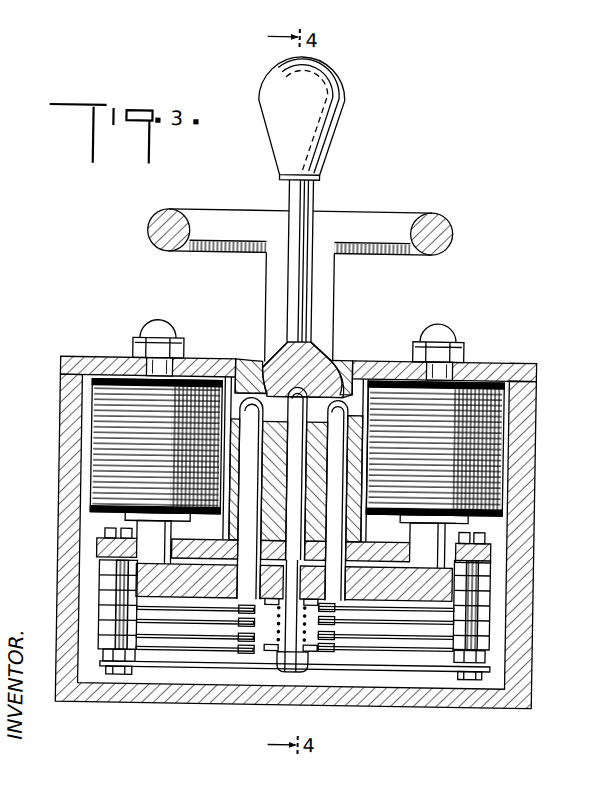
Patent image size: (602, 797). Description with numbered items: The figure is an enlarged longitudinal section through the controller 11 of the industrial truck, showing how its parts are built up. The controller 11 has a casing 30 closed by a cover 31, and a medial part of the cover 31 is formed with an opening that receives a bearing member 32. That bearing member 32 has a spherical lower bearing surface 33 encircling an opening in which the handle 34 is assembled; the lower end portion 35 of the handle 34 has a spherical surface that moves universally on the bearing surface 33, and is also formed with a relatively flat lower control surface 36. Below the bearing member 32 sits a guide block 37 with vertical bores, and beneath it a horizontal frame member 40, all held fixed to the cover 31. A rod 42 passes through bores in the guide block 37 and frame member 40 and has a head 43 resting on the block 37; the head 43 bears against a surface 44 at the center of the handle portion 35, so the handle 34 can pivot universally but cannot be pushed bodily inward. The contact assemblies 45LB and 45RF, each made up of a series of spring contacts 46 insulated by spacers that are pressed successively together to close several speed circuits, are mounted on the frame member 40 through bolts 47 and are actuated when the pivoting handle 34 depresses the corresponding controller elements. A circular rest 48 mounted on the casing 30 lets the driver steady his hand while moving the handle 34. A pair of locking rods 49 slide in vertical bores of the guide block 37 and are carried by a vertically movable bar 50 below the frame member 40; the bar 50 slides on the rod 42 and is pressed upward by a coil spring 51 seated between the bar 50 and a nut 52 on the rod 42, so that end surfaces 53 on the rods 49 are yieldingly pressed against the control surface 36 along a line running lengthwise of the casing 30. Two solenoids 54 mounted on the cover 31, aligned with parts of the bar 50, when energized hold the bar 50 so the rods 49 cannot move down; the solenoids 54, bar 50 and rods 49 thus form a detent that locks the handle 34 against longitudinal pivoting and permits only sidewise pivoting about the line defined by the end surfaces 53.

The controller 11 is at (130, 303).
The casing 30 is at (533, 420).
The cover 31 is at (517, 365).
The bearing member 32 is at (338, 364).
The spherical lower bearing surface 33 is at (331, 350).
The handle 34 is at (329, 136).
The lower end portion of handle 35 is at (272, 347).
The relatively flat lower control surface 36 is at (260, 370).
The guide block 37 is at (362, 442).
The horizontal frame member 40 is at (489, 553).
The rod 42 is at (296, 478).
The head 43 is at (303, 405).
The surface 44 is at (349, 400).
The contact assembly 45LB is at (96, 610).
The contact assembly 45RF is at (494, 609).
The spring contacts 46 is at (226, 626).
The bolts 47 is at (105, 536).
The circular rest 48 is at (415, 214).
The locking rods 49 is at (240, 526).
The vertically movable bar 50 is at (154, 570).
The coil spring 51 is at (308, 632).
The nut 52 is at (280, 656).
The end surfaces 53 is at (253, 384).
The solenoids 54 is at (88, 429).